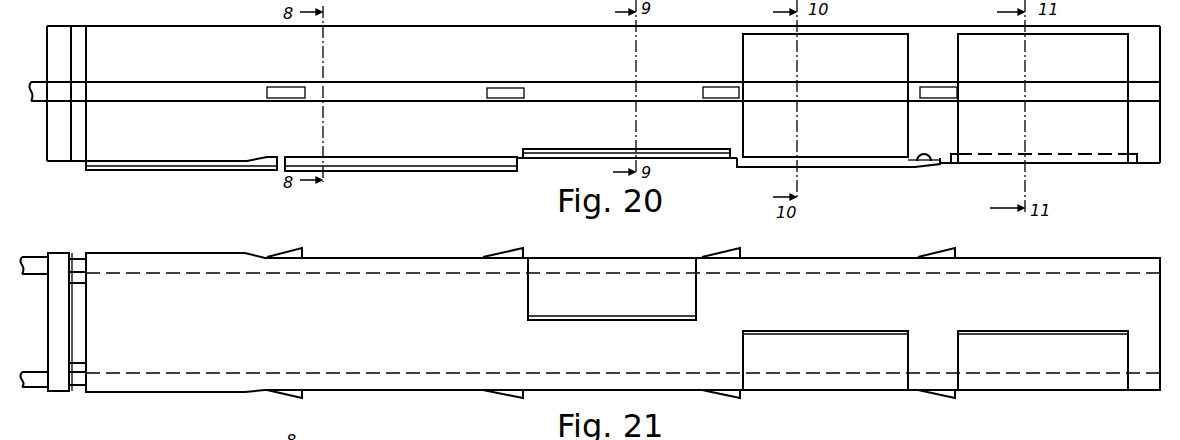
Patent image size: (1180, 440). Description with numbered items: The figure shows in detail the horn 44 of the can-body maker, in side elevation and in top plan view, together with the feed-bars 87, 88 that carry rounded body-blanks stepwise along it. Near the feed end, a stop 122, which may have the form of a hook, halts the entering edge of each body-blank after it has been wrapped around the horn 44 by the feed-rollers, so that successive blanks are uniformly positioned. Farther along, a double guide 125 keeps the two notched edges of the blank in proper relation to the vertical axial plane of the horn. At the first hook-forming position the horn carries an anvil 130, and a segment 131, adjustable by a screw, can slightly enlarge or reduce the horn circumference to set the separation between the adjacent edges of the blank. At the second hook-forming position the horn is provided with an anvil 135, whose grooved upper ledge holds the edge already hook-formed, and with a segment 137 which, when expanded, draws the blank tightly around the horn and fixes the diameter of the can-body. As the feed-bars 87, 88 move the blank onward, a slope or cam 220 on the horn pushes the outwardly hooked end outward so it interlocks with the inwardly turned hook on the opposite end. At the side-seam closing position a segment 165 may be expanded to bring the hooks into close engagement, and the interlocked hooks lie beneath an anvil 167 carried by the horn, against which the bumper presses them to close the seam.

In FIG. 20, the horn 44 is at (618, 47).
In FIG. 21, the horn 44 is at (177, 351).
In FIG. 20, the feed-bar 88 is at (368, 93).
In FIG. 21, the feed-bar 88 is at (35, 380).
In FIG. 21, the feed-bar 87 is at (32, 267).
In FIG. 20, the stop 122 is at (163, 167).
In FIG. 20, the double guide 125 is at (388, 168).
In FIG. 20, the anvil 130 is at (543, 153).
In FIG. 21, the segment 131 is at (618, 292).
In FIG. 20, the segment 137 is at (781, 145).
In FIG. 21, the segment 137 is at (862, 439).
In FIG. 20, the anvil 135 is at (850, 162).
In FIG. 20, the slope or cam 220 is at (928, 163).
In FIG. 20, the segment 165 is at (980, 142).
In FIG. 21, the segment 165 is at (1046, 439).
In FIG. 20, the anvil 167 is at (1050, 160).